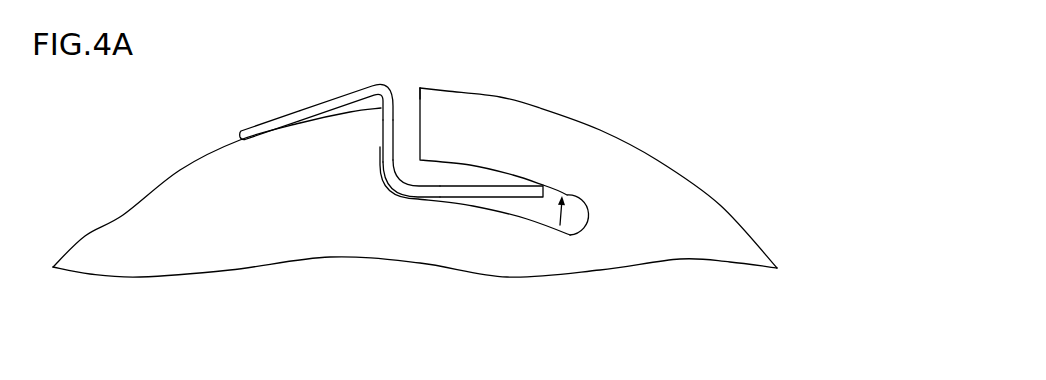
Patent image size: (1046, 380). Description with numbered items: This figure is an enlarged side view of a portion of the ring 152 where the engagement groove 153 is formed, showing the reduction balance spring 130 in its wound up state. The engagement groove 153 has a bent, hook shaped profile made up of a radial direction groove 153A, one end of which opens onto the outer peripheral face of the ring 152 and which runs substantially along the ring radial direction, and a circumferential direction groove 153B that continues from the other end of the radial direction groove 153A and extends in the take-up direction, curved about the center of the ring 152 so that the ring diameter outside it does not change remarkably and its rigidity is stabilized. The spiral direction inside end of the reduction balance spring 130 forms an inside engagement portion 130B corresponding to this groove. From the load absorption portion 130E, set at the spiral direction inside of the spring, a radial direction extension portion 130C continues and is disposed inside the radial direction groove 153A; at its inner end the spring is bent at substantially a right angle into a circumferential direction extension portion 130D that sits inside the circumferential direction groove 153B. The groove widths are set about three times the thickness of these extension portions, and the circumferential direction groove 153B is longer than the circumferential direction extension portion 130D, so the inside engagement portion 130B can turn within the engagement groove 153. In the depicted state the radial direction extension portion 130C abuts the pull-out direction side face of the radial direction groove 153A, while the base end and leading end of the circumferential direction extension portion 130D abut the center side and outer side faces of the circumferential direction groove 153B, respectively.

The reduction balance spring 130 is at (365, 184).
The load absorption portion 130E is at (273, 127).
The radial direction extension portion 130C is at (387, 145).
The inside engagement portion 130B is at (423, 200).
The circumferential direction extension portion 130D is at (473, 192).
The ring 152 is at (415, 186).
The engagement groove 153 is at (538, 186).
The radial direction groove 153A is at (415, 100).
The circumferential direction groove 153B is at (507, 208).